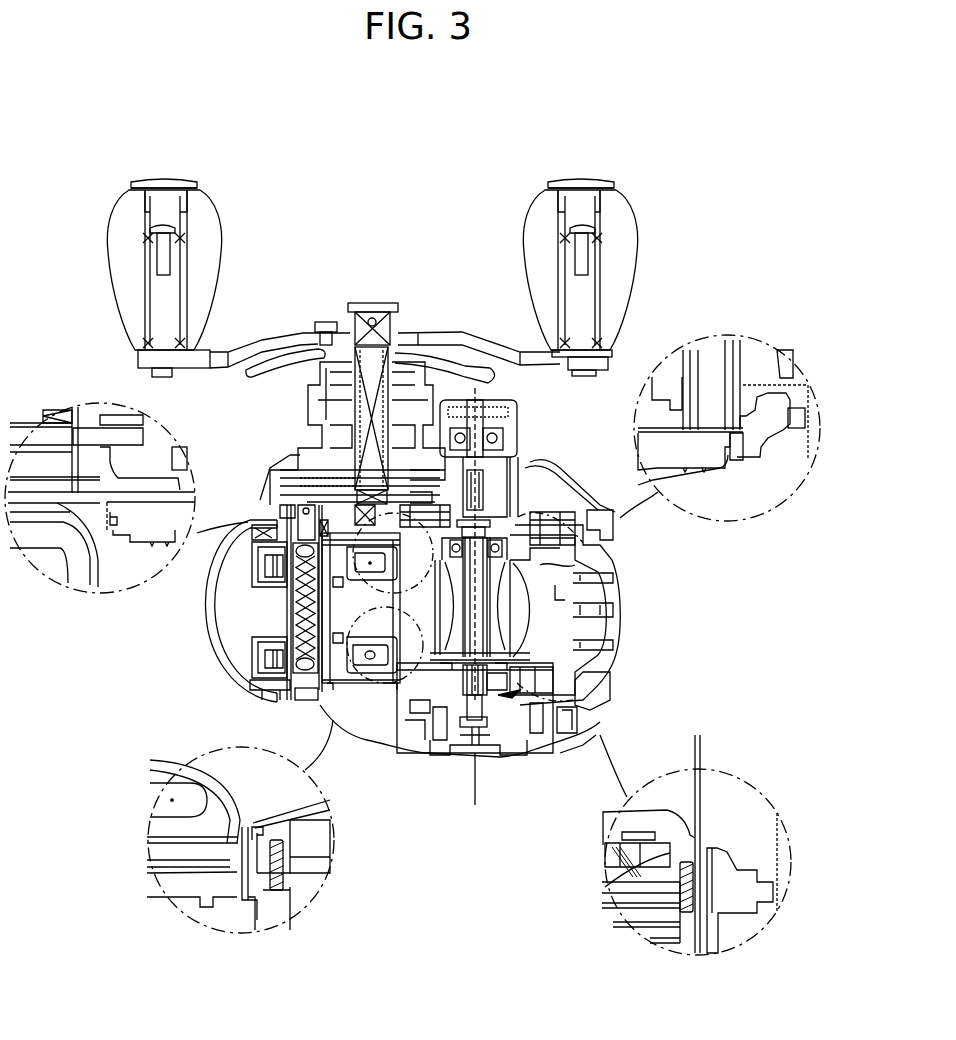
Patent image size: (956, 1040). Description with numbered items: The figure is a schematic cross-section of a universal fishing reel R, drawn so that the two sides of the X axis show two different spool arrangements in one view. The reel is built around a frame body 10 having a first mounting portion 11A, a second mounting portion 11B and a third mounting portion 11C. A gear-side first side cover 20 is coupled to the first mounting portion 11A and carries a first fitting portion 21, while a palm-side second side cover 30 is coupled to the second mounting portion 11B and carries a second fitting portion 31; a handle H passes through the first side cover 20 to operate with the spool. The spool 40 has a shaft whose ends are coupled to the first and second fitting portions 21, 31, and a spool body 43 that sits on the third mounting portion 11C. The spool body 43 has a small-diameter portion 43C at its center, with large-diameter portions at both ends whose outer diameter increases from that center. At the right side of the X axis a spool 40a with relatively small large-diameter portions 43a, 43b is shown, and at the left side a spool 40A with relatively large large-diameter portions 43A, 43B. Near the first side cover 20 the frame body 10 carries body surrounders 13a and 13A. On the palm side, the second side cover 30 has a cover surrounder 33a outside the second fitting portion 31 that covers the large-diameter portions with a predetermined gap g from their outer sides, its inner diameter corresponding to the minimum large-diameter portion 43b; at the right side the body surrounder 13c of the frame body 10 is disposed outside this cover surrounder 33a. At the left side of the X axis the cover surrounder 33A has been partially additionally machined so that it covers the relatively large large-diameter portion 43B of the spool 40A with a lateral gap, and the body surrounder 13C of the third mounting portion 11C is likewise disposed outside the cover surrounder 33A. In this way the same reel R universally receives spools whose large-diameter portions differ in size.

The universal fishing reel R is at (80, 154).
The handle H is at (213, 211).
The frame body 10 is at (640, 624).
The first mounting portion 11A is at (617, 534).
The second mounting portion 11B is at (625, 682).
The third mounting portion 11C is at (575, 590).
The body surrounder 13a is at (720, 425).
The body surrounder 13A is at (124, 500).
The body surrounder 13c is at (736, 870).
The body surrounder 13C is at (240, 880).
The gear-side first side cover 20 is at (545, 458).
The first fitting portion 21 is at (495, 488).
The palm-side second side cover 30 is at (556, 762).
The second fitting portion 31 is at (508, 758).
The cover surrounder 33A is at (250, 812).
The cover surrounder 33a is at (718, 845).
The spool 40 is at (112, 672).
The spool 40A is at (420, 616).
The spool 40a is at (378, 683).
The spool body 43 is at (530, 598).
The large-diameter portion 43a is at (740, 460).
The large-diameter portion 43A is at (115, 530).
The large-diameter portion 43b is at (678, 880).
The large-diameter portion 43B is at (292, 835).
The small-diameter portion 43C is at (442, 608).
The X axis X is at (474, 795).
The gap g is at (724, 742).